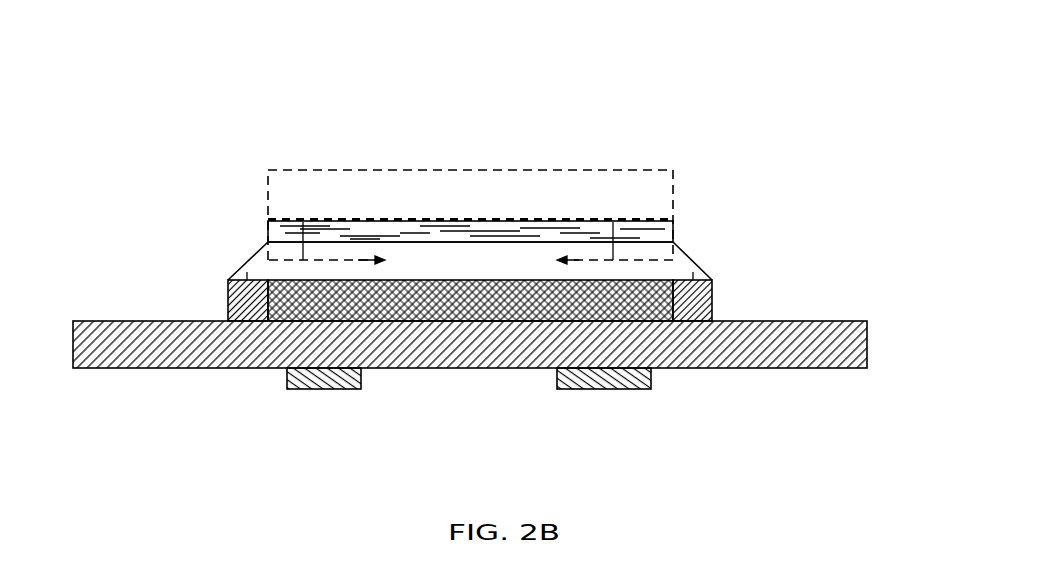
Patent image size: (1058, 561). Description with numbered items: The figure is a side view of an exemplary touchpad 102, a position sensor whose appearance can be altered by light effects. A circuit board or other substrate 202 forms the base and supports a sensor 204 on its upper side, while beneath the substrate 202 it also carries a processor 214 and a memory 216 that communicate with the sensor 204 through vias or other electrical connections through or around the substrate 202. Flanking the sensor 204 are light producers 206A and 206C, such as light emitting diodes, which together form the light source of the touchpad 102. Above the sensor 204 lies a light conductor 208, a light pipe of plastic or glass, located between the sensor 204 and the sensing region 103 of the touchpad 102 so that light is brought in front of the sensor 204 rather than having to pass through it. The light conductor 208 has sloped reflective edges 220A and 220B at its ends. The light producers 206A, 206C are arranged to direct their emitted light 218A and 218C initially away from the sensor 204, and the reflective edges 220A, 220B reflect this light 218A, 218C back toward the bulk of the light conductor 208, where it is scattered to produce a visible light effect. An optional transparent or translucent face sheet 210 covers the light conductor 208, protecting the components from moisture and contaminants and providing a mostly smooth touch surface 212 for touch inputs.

The touchpad 102 is at (718, 90).
The sensing region 103 is at (422, 190).
The substrate 202 is at (867, 343).
The sensor 204 is at (443, 307).
The light producer 206A is at (713, 294).
The light producer 206C is at (228, 303).
The light conductor 208 is at (668, 262).
The face sheet 210 is at (660, 231).
The touch surface 212 is at (448, 218).
The processor 214 is at (327, 389).
The memory 216 is at (620, 389).
The light 218A is at (615, 221).
The light 218C is at (307, 221).
The reflective edge 220A is at (700, 276).
The reflective edge 220B is at (242, 268).